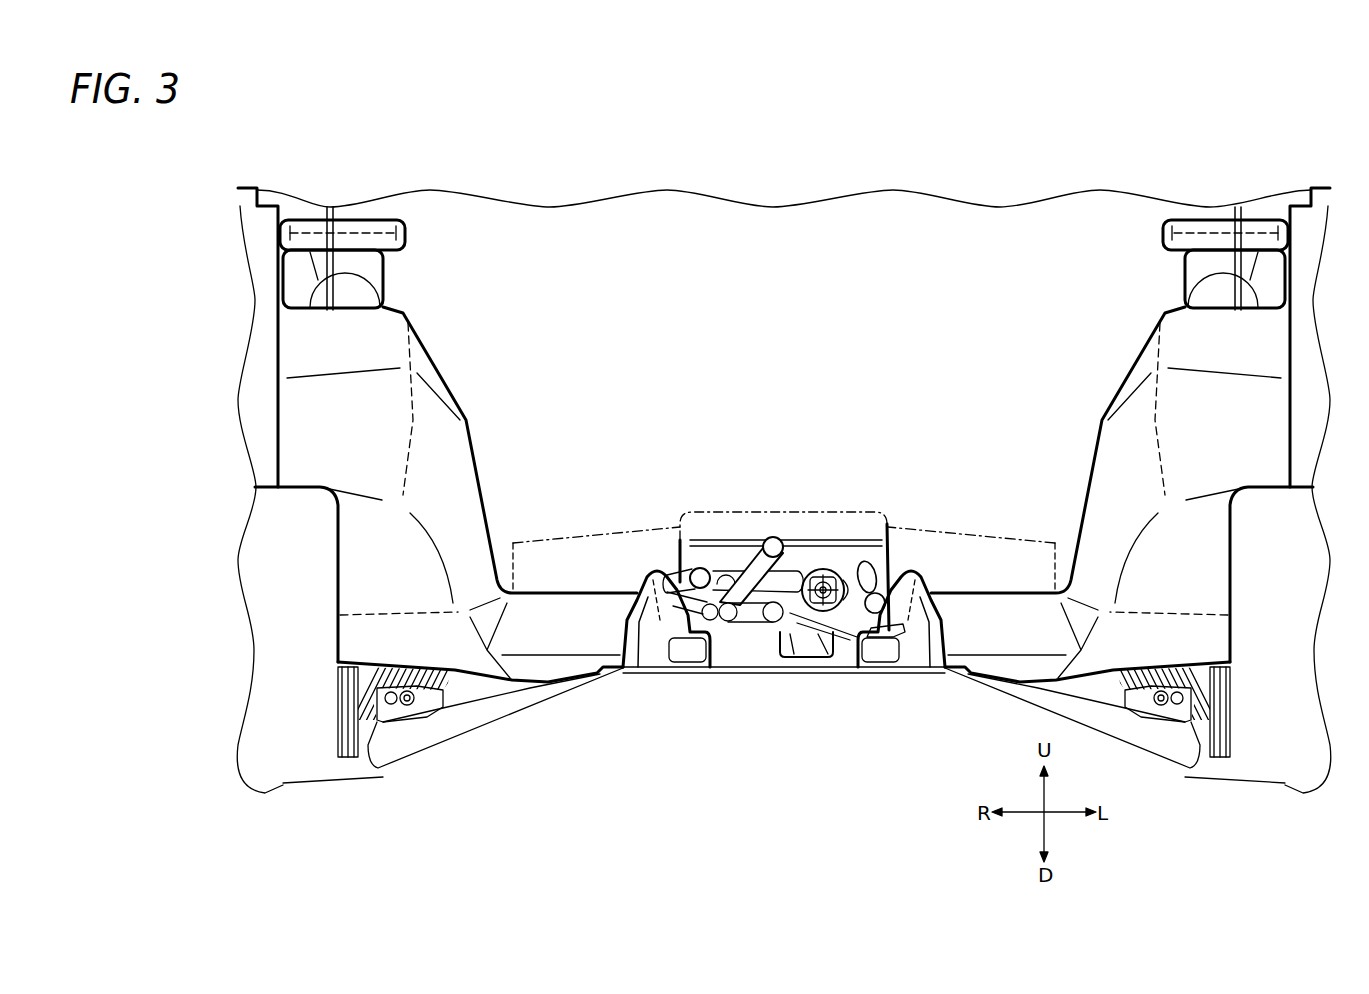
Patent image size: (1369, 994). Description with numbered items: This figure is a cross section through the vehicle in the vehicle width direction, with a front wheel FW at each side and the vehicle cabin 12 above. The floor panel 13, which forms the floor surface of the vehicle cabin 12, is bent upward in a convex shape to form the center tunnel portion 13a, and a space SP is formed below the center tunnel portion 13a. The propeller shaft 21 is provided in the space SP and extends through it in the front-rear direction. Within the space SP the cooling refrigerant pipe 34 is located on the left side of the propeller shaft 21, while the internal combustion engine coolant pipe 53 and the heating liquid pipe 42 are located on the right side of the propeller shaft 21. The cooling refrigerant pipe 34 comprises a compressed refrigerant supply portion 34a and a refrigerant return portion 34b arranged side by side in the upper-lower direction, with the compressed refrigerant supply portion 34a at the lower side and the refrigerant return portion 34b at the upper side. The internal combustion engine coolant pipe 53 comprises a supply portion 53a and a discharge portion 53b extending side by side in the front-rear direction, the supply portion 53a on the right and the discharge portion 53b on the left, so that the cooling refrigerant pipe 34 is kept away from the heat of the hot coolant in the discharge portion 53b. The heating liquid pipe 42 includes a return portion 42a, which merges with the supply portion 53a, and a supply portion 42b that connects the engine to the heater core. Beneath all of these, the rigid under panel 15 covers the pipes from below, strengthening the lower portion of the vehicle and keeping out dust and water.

The vehicle cabin 12 is at (893, 227).
The floor panel 13 is at (590, 592).
The center tunnel portion 13a is at (710, 539).
The under panel 15 is at (757, 674).
The propeller shaft 21 is at (789, 578).
The cooling refrigerant pipe 34 is at (896, 601).
The compressed refrigerant supply portion 34a is at (900, 635).
The refrigerant return portion 34b is at (866, 565).
The heating liquid pipe 42 is at (722, 511).
The return portion 42a is at (771, 538).
The supply portion 42b is at (697, 569).
The internal combustion engine coolant pipe 53 is at (784, 682).
The supply portion 53a is at (709, 619).
The discharge portion 53b is at (777, 617).
The space SP is at (731, 660).
The front wheel FW is at (285, 763).